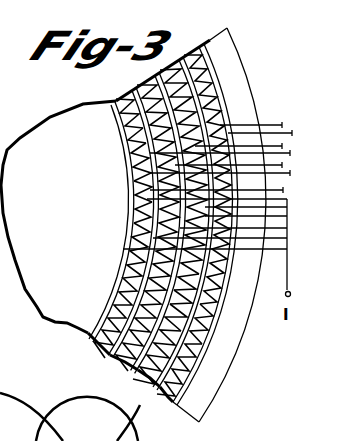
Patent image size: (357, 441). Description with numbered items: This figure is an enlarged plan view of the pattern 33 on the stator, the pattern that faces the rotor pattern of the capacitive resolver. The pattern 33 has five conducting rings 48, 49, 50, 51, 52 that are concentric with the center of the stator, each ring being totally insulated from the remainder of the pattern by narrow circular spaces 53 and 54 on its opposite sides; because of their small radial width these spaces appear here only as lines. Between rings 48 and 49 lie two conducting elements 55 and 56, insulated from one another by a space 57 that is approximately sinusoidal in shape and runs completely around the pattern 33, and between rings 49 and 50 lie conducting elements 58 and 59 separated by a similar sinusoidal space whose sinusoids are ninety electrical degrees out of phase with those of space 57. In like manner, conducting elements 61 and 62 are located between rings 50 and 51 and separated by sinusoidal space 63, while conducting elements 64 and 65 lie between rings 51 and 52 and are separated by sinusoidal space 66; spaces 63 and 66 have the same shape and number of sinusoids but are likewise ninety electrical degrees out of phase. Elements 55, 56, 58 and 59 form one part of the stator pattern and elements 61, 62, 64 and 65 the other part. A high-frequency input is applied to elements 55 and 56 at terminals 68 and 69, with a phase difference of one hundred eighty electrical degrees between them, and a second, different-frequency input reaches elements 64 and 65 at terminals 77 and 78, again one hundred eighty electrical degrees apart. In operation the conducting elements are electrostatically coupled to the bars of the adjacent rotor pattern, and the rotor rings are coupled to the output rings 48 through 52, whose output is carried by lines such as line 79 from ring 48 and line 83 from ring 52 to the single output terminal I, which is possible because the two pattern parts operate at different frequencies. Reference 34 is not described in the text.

The pattern 33 is at (226, 84).
The outer cover strip 34 is at (245, 90).
The conducting ring 48 is at (173, 403).
The conducting ring 49 is at (160, 387).
The conducting ring 50 is at (138, 372).
The conducting ring 51 is at (112, 358).
The conducting ring 52 is at (88, 338).
The circular space 53 is at (118, 268).
The circular space 54 is at (110, 288).
The conducting element 55 is at (185, 300).
The conducting element 56 is at (195, 285).
The space 57 is at (212, 252).
The conducting element 58 is at (190, 305).
The conducting element 59 is at (190, 317).
The conducting element 61 is at (168, 66).
The conducting element 62 is at (126, 94).
The sinusoidal space 63 is at (152, 76).
The conducting element 64 is at (140, 153).
The conducting element 65 is at (137, 135).
The sinusoidal space 66 is at (132, 119).
The terminal 68 is at (228, 117).
The terminal 69 is at (226, 127).
The terminal 77 is at (147, 208).
The terminal 78 is at (148, 193).
The line 79 is at (282, 207).
The line 83 is at (256, 257).